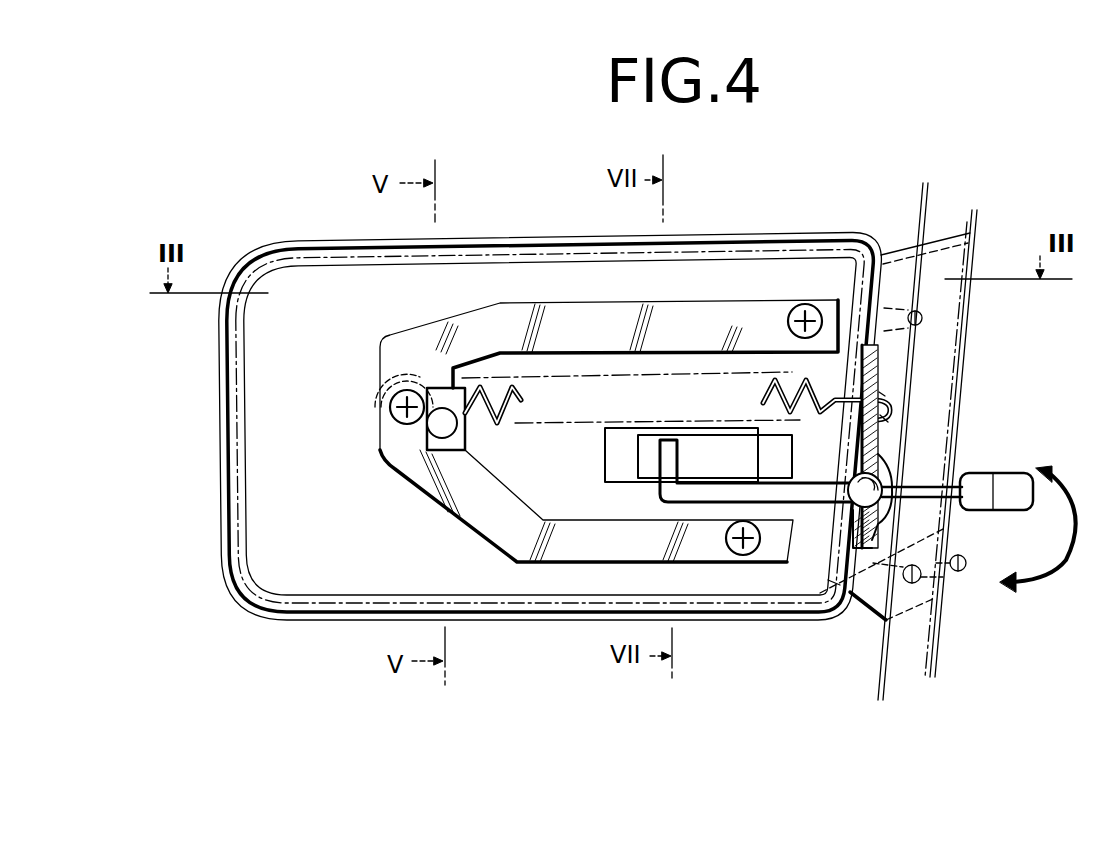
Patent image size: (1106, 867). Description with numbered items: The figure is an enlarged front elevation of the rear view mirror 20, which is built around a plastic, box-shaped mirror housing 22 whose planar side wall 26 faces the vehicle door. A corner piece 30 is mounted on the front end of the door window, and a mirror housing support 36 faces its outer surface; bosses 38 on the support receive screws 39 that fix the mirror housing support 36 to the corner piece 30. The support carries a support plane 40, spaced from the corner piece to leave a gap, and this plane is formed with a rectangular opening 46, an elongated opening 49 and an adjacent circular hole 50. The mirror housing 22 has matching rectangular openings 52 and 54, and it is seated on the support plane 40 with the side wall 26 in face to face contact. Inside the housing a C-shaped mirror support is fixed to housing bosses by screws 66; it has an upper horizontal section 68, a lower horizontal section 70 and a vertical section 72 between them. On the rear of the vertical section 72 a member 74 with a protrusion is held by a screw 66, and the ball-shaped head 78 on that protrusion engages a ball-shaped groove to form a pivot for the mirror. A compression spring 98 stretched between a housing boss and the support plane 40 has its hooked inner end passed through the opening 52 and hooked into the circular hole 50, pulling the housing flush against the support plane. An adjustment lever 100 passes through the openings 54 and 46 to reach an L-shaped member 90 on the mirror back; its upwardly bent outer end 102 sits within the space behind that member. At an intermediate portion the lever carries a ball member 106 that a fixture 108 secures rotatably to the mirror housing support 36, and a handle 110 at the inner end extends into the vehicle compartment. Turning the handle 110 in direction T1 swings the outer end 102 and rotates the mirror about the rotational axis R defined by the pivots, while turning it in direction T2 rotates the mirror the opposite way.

The rear view mirror 20 is at (846, 222).
The mirror housing 22 is at (745, 232).
The side wall 26 is at (858, 463).
The corner piece 30 is at (975, 222).
The mirror housing support 36 is at (900, 276).
The bosses 38 is at (950, 582).
The screws 39 is at (966, 559).
The support plane 40 is at (893, 441).
The rectangular opening 46 is at (884, 622).
The elongated opening 49 is at (898, 393).
The circular hole 50 is at (900, 411).
The rectangular opening 52 is at (855, 387).
The rectangular opening 54 is at (850, 601).
The screws 66 is at (808, 306).
The upper horizontal section 68 is at (600, 322).
The lower horizontal section 70 is at (627, 545).
The vertical section 72 is at (378, 363).
The member 74 is at (426, 392).
The ball-shaped head 78 is at (440, 440).
The member 90 is at (603, 462).
The compression spring 98 is at (522, 408).
The adjustment lever 100 is at (808, 580).
The outer end 102 is at (667, 450).
The ball member 106 is at (870, 484).
The fixture 108 is at (873, 515).
The handle 110 is at (1017, 491).
The rotational axis R is at (1047, 536).
The direction of rotation T1 is at (1038, 526).
The direction of rotation T2 is at (1004, 595).